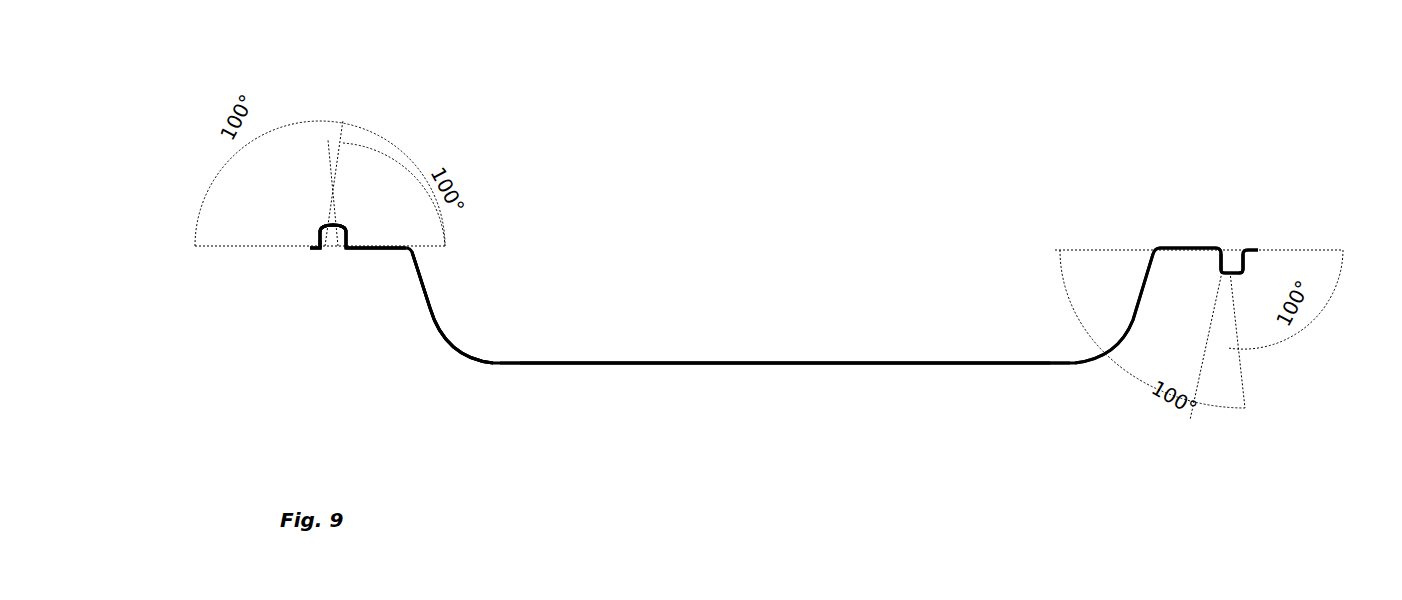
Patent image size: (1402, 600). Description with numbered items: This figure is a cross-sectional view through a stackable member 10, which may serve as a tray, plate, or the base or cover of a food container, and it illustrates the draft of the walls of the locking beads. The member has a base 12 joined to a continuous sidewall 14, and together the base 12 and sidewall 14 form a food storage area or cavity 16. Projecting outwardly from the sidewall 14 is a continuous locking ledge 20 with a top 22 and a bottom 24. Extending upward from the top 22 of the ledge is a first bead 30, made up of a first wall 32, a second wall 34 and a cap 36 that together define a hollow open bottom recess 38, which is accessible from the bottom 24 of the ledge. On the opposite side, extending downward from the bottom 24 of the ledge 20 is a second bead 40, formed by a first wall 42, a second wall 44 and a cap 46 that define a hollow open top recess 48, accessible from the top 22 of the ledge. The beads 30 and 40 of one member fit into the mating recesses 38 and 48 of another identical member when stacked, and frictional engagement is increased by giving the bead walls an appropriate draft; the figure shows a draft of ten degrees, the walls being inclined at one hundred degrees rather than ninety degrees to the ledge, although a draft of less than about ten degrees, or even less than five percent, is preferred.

The stackable member 10 is at (968, 420).
The base 12 is at (660, 364).
The continuous sidewall 14 is at (433, 312).
The food storage area or cavity 16 is at (785, 334).
The continuous locking ledge 20 is at (407, 338).
The top of the locking ledge 22 is at (1186, 246).
The bottom of the locking ledge 24 is at (376, 252).
The first bead 30 is at (298, 188).
The first wall 32 is at (320, 233).
The second wall 34 is at (348, 233).
The cap 36 is at (340, 226).
The hollow open bottom recess 38 is at (328, 262).
The second bead 40 is at (1213, 310).
The first wall 42 is at (1256, 252).
The second wall 44 is at (1220, 268).
The cap 46 is at (1242, 268).
The hollow open top recess 48 is at (1245, 232).